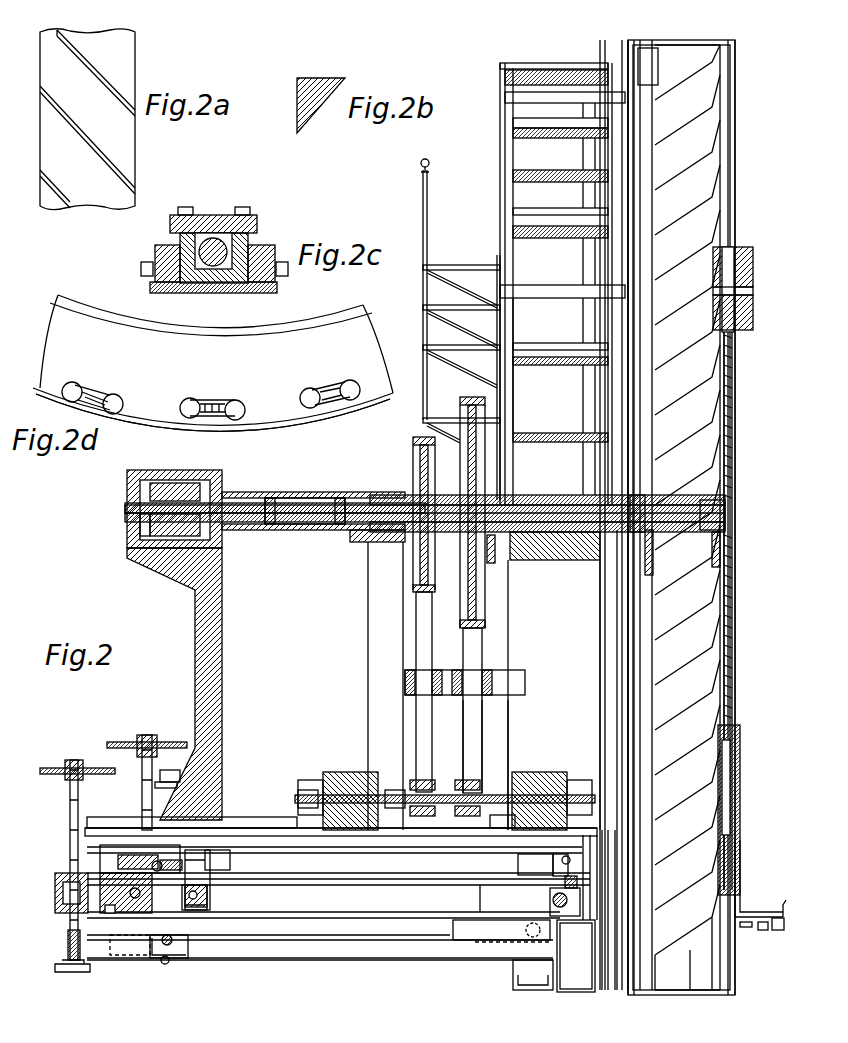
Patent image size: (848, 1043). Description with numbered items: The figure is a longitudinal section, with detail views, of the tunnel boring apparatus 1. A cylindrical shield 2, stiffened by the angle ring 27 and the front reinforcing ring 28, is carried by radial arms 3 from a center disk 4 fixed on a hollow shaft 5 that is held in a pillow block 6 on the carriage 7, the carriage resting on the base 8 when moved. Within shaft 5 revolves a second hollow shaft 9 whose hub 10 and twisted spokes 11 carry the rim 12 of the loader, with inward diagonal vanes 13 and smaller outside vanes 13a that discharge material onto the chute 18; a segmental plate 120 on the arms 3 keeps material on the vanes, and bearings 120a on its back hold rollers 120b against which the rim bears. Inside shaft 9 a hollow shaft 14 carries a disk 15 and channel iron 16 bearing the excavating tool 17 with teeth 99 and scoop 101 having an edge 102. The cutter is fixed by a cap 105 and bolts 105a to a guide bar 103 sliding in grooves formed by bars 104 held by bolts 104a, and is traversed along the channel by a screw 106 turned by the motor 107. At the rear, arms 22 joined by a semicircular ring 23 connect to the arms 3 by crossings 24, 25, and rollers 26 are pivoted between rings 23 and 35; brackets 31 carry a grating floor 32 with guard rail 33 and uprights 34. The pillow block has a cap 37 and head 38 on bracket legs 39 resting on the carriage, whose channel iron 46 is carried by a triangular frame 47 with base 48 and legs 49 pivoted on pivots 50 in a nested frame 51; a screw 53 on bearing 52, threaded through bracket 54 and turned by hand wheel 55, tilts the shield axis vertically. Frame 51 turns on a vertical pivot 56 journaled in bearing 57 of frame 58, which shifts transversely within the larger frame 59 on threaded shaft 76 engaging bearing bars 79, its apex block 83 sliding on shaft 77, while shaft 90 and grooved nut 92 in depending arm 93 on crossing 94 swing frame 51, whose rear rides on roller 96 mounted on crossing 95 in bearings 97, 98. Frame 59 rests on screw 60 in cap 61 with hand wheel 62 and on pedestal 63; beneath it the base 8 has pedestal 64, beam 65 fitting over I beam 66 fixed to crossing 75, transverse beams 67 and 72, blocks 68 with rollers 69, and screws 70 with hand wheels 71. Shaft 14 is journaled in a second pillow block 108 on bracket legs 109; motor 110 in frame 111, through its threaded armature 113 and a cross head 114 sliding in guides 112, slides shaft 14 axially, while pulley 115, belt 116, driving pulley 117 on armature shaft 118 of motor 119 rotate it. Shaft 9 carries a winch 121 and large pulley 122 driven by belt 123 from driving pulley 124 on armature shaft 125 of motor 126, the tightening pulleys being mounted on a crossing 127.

In FIG. 2, the boring apparatus 1 is at (532, 284).
In FIG. 2D, the shield 2 is at (213, 414).
In FIG. 2, the shield 2 is at (695, 43).
In FIG. 2, the radial arms 3 is at (614, 515).
In FIG. 2, the center disk 4 is at (628, 488).
In FIG. 2, the hollow shaft 5 is at (575, 500).
In FIG. 2, the pillow block 6 is at (554, 695).
In FIG. 2, the carriage 7 is at (282, 822).
In FIG. 2, the base 8 is at (282, 960).
In FIG. 2, the second hollow shaft 9 is at (547, 492).
In FIG. 2, the hub 10 is at (657, 552).
In FIG. 2, the spokes 11 is at (645, 515).
In FIG. 2A, the rim 12 is at (87, 119).
In FIG. 2, the rim 12 is at (685, 517).
In FIG. 2, the vanes 13 is at (680, 517).
In FIG. 2A, the smaller vanes 13a is at (115, 82).
In FIG. 2B, the smaller vanes 13a is at (296, 112).
In FIG. 2, the hollow shaft 14 is at (702, 511).
In FIG. 2, the disk 15 is at (712, 550).
In FIG. 2C, the channel iron 16 is at (225, 288).
In FIG. 2, the channel iron 16 is at (716, 648).
In FIG. 2, the excavating tool 17 is at (741, 862).
In FIG. 2, the chute 18 is at (617, 680).
In FIG. 2, the radially disposed arms 22 is at (515, 392).
In FIG. 2, the semicircular ring 23 is at (552, 60).
In FIG. 2, the crossings 24 is at (570, 286).
In FIG. 2, the crossings 25 is at (540, 100).
In FIG. 2, the rollers 26 is at (565, 70).
In FIG. 2, the angle ring 27 is at (616, 516).
In FIG. 2, the reinforcing ring 28 is at (739, 517).
In FIG. 2, the brackets 31 is at (462, 356).
In FIG. 2, the floor 32 is at (461, 376).
In FIG. 2, the guard rail 33 is at (421, 156).
In FIG. 2, the uprights 34 is at (423, 240).
In FIG. 2, the semicircular ring 35 is at (602, 282).
In FIG. 2, the cap 37 is at (536, 500).
In FIG. 2, the head 38 is at (575, 560).
In FIG. 2, the bracket legs 39 is at (534, 737).
In FIG. 2, the channel iron 46 is at (255, 822).
In FIG. 2, the triangular frame 47 is at (341, 839).
In FIG. 2, the base 48 is at (582, 877).
In FIG. 2, the legs 49 is at (502, 832).
In FIG. 2, the pivots 50 is at (535, 864).
In FIG. 2, the triangular frame 51 is at (334, 859).
In FIG. 2, the bearing 52 is at (140, 850).
In FIG. 2, the screw 53 is at (142, 780).
In FIG. 2, the bracket 54 is at (196, 665).
In FIG. 2, the hand wheel 55 is at (140, 740).
In FIG. 2, the pivot 56 is at (576, 867).
In FIG. 2, the bearing 57 is at (560, 890).
In FIG. 2, the frame 58 is at (338, 888).
In FIG. 2, the triangle 59 is at (60, 890).
In FIG. 2, the screw 60 is at (68, 945).
In FIG. 2, the cap 61 is at (66, 964).
In FIG. 2, the hand wheel 62 is at (62, 768).
In FIG. 2, the pedestal 63 is at (576, 956).
In FIG. 2, the pedestal 64 is at (533, 975).
In FIG. 2, the beam 65 is at (320, 946).
In FIG. 2, the I beam 66 is at (112, 938).
In FIG. 2, the beam 67 is at (182, 960).
In FIG. 2, the blocks 68 is at (158, 955).
In FIG. 2, the rollers 69 is at (173, 942).
In FIG. 2, the screws 70 is at (160, 975).
In FIG. 2, the hand wheels 71 is at (170, 765).
In FIG. 2, the beam 72 is at (528, 940).
In FIG. 2, the crossing 75 is at (501, 930).
In FIG. 2, the shaft 76 is at (565, 904).
In FIG. 2, the shaft 77 is at (145, 892).
In FIG. 2, the bearing bars 79 is at (496, 898).
In FIG. 2, the block 83 is at (323, 922).
In FIG. 2, the shaft 90 is at (194, 889).
In FIG. 2, the grooved nut 92 is at (207, 897).
In FIG. 2, the downwardly depending arm 93 is at (195, 881).
In FIG. 2, the crossing 94 is at (212, 860).
In FIG. 2, the crossing 95 is at (148, 898).
In FIG. 2, the roller 96 is at (165, 860).
In FIG. 2, the bearings 97 is at (182, 848).
In FIG. 2, the bearing 98 is at (152, 855).
In FIG. 2, the teeth 99 is at (758, 928).
In FIG. 2, the scoop 101 is at (775, 916).
In FIG. 2, the edge 102 is at (784, 907).
In FIG. 2C, the guide bar 103 is at (182, 240).
In FIG. 2, the guide bar 103 is at (740, 818).
In FIG. 2C, the bars 104 is at (156, 252).
In FIG. 2C, the bolts 104a is at (141, 270).
In FIG. 2C, the cap 105 is at (257, 224).
In FIG. 2C, the bolts 105a is at (217, 204).
In FIG. 2C, the screw 106 is at (213, 238).
In FIG. 2, the screw 106 is at (732, 650).
In FIG. 2, the motor 107 is at (753, 292).
In FIG. 2, the pillow block 108 is at (377, 544).
In FIG. 2, the bracket legs 109 is at (385, 686).
In FIG. 2, the motor 110 is at (140, 532).
In FIG. 2, the frame 111 is at (127, 490).
In FIG. 2, the guides 112 is at (288, 492).
In FIG. 2, the armature 113 is at (125, 510).
In FIG. 2, the cross head 114 is at (305, 511).
In FIG. 2, the pulley wheel 115 is at (413, 490).
In FIG. 2, the belt 116 is at (432, 605).
In FIG. 2, the driving pulley 117 is at (436, 780).
In FIG. 2, the armature shaft 118 is at (440, 800).
In FIG. 2, the motor 119 is at (350, 772).
In FIG. 2D, the segmental plate 120 is at (213, 363).
In FIG. 2, the segmental plate 120 is at (614, 910).
In FIG. 2D, the bearings 120a is at (73, 382).
In FIG. 2D, the rollers 120b is at (118, 392).
In FIG. 2, the winch 121 is at (480, 512).
In FIG. 2, the large pulley 122 is at (484, 605).
In FIG. 2, the belt 123 is at (482, 700).
In FIG. 2, the driving pulley 124 is at (480, 790).
In FIG. 2, the armature shaft 125 is at (445, 803).
In FIG. 2, the motor 126 is at (528, 772).
In FIG. 2, the crossing 127 is at (465, 682).